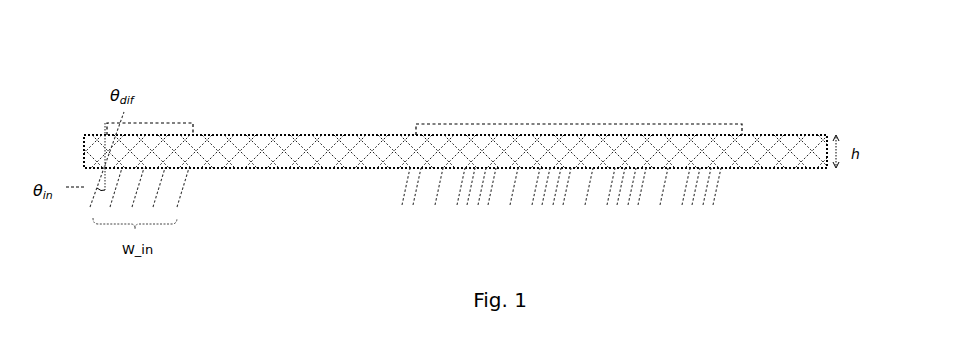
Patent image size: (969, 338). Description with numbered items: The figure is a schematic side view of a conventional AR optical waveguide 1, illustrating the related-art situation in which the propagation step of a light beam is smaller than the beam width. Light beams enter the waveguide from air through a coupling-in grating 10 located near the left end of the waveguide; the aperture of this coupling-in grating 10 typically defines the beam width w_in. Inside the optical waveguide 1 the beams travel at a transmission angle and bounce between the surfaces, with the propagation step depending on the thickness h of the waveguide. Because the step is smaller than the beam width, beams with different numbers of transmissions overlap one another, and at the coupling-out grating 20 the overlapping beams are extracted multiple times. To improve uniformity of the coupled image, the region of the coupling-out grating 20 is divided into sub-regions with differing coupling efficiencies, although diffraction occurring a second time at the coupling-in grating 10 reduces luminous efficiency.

The optical waveguide 1 is at (806, 130).
The coupling-in grating 10 is at (172, 116).
The coupling-out grating 20 is at (578, 119).